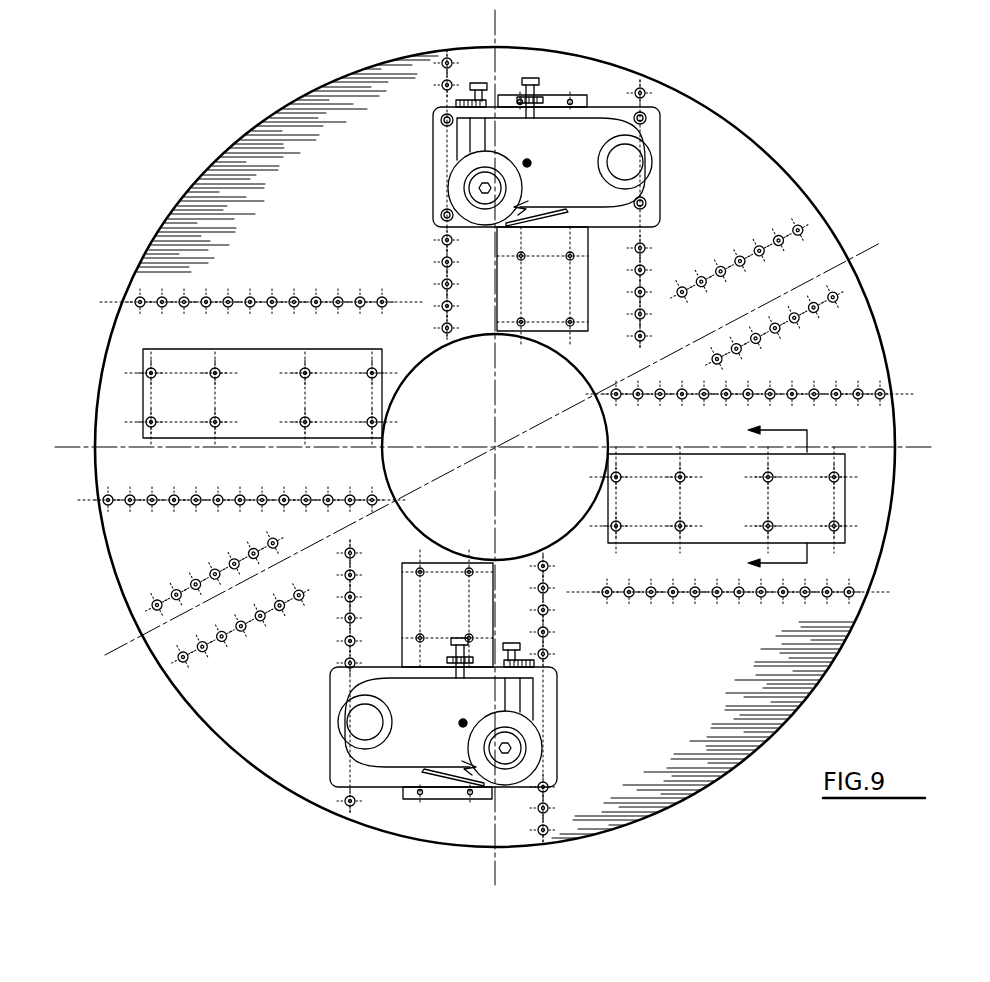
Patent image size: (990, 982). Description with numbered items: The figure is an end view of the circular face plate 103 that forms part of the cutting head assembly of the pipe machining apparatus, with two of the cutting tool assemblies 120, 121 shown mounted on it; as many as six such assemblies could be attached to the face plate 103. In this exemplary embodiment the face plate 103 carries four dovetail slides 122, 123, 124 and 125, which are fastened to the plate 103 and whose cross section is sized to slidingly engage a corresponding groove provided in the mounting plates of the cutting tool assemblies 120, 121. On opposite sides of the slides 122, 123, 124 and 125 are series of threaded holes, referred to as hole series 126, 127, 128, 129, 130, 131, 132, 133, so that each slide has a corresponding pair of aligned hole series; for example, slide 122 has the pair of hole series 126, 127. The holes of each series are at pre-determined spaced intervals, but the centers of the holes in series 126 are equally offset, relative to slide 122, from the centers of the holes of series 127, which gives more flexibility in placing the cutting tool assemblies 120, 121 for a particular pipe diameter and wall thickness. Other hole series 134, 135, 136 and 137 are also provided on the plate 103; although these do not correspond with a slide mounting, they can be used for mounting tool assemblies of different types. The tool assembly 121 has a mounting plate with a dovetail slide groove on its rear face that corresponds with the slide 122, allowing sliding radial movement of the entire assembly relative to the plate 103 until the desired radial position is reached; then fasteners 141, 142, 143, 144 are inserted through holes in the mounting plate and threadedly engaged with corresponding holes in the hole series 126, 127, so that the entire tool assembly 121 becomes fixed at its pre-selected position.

The circular face plate 103 is at (738, 150).
The cutting tool assembly 120 is at (509, 794).
The cutting tool assembly 121 is at (550, 121).
The dovetail slide 122 is at (548, 300).
The dovetail slide 123 is at (647, 508).
The dovetail slide 124 is at (448, 583).
The dovetail slide 125 is at (383, 396).
The hole series 126 is at (447, 284).
The hole series 127 is at (640, 292).
The hole series 128 is at (836, 395).
The hole series 129 is at (783, 593).
The hole series 130 is at (543, 654).
The hole series 131 is at (350, 641).
The hole series 132 is at (262, 500).
The hole series 133 is at (250, 300).
The hole series 134 is at (740, 261).
The hole series 135 is at (794, 318).
The hole series 136 is at (260, 616).
The hole series 137 is at (215, 574).
The fastener 141 is at (642, 118).
The fastener 142 is at (646, 203).
The fastener 143 is at (447, 214).
The fastener 144 is at (447, 121).